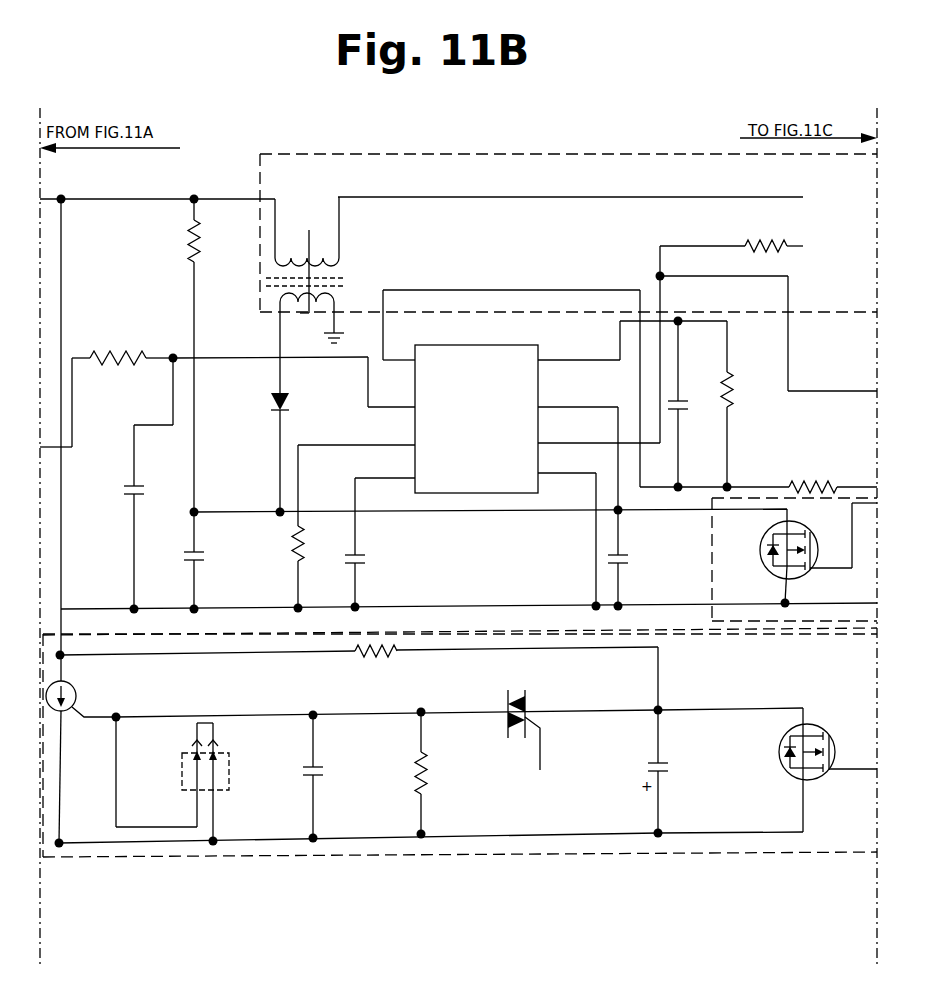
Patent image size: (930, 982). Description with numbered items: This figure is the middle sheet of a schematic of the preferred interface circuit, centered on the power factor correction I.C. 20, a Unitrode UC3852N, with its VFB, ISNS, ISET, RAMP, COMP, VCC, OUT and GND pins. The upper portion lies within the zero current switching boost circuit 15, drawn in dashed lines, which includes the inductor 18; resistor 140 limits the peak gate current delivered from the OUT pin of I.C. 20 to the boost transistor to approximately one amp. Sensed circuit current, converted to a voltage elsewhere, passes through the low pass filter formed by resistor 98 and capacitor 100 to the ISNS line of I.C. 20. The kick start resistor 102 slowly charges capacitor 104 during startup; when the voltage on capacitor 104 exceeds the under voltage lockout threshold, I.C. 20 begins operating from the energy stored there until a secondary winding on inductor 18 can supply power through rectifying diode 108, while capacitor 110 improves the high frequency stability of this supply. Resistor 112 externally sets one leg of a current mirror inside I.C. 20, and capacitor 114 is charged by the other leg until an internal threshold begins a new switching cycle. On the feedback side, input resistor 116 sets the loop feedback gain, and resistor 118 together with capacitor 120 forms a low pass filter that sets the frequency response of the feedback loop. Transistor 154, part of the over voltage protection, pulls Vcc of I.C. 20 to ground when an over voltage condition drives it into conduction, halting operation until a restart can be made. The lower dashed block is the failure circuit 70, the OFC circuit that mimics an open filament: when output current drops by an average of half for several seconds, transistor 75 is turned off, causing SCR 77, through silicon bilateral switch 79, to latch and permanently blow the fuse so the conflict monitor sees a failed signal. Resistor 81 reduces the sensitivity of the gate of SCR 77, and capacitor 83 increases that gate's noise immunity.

The zero current switching boost circuit 15 is at (423, 153).
The inductor 18 is at (340, 262).
The power factor correction I.C. 20 is at (438, 345).
The failure circuit 70 is at (420, 858).
The transistor 75 is at (785, 778).
The SCR 77 is at (78, 703).
The silicon bilateral switch 79 is at (525, 706).
The resistor 81 is at (430, 776).
The capacitor 83 is at (319, 771).
The resistor 98 is at (147, 352).
The capacitor 100 is at (131, 490).
The kick start resistor 102 is at (190, 258).
The capacitor 104 is at (232, 572).
The rectifying diode 108 is at (283, 411).
The capacitor 110 is at (647, 576).
The resistor 112 is at (322, 556).
The capacitor 114 is at (387, 571).
The input resistor 116 is at (803, 484).
The resistor 118 is at (729, 406).
The capacitor 120 is at (700, 390).
The resistor 140 is at (745, 245).
The transistor 154 is at (762, 556).